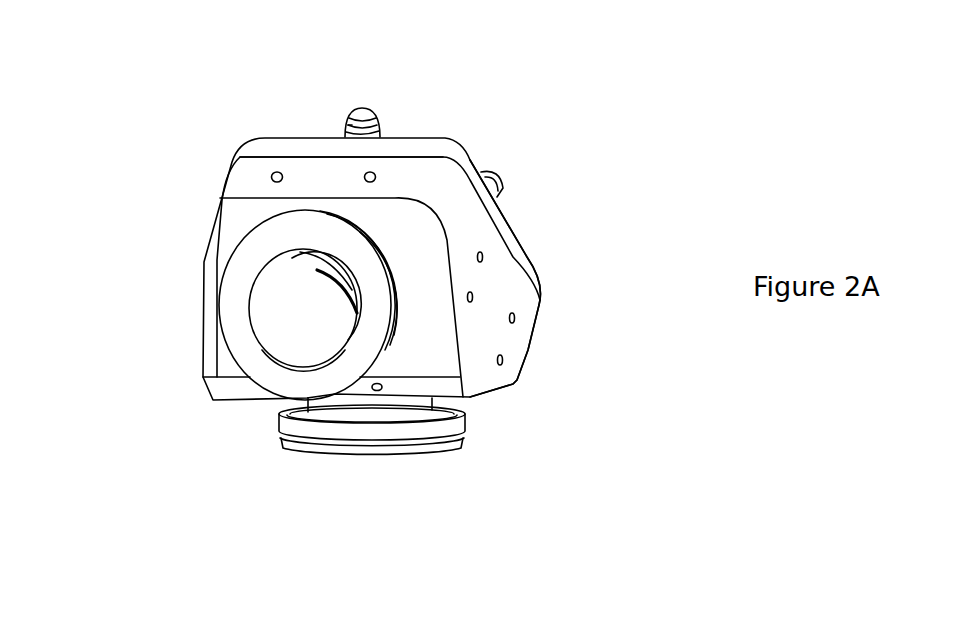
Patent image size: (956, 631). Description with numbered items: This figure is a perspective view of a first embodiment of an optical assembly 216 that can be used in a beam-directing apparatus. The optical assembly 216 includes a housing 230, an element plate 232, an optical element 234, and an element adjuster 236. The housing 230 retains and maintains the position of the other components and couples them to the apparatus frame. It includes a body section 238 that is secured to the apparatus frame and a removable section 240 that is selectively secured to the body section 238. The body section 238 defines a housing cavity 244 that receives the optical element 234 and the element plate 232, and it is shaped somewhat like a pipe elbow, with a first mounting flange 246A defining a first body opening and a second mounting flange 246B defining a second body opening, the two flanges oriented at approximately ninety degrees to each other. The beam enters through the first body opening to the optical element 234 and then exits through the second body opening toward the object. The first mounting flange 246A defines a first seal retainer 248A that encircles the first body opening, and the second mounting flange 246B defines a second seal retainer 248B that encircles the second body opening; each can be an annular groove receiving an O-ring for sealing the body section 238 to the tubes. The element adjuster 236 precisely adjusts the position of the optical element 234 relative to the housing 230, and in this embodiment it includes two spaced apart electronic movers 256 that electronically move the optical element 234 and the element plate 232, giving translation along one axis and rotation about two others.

The optical assembly 216 is at (525, 122).
The housing 230 is at (225, 190).
The element plate 232 is at (204, 296).
The optical element 234 is at (206, 296).
The element adjuster 236 is at (360, 96).
The body section 238 is at (548, 356).
The removable section 240 is at (552, 232).
The housing cavity 244 is at (268, 334).
The first mounting flange 246A is at (251, 429).
The second mounting flange 246B is at (372, 463).
The first seal retainer 248A is at (362, 229).
The second seal retainer 248B is at (437, 447).
The electronic mover 256 is at (277, 77).